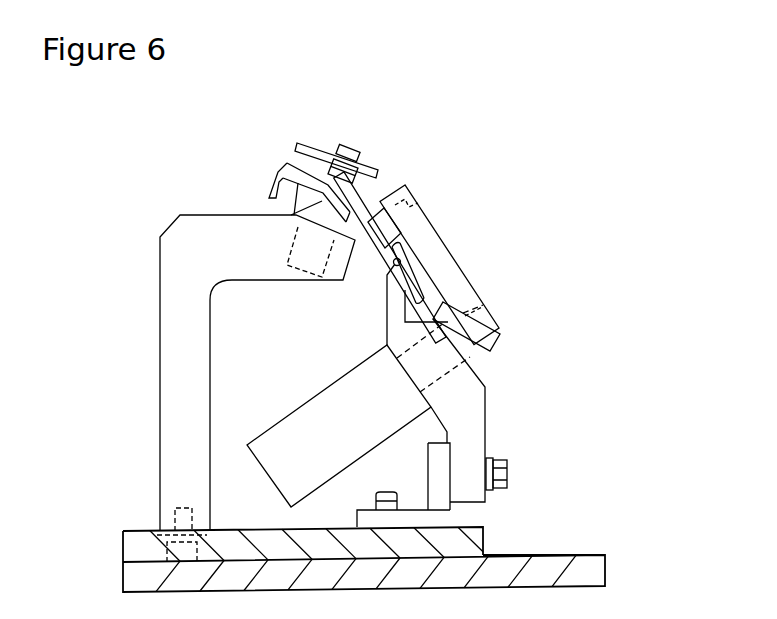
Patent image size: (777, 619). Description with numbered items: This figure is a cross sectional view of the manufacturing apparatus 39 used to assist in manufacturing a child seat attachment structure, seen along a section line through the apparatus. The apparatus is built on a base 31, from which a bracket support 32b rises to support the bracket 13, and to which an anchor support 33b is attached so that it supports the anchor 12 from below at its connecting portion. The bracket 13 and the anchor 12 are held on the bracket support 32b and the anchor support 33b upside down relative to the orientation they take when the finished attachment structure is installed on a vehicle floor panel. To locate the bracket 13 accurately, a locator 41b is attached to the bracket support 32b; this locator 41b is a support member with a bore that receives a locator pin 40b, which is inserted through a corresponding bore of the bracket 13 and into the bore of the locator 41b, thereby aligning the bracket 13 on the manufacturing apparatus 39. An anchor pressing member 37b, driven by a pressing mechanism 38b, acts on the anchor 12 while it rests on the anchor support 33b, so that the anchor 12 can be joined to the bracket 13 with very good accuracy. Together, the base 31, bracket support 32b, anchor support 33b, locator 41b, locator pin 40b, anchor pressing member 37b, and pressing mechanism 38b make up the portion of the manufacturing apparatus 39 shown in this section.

The base 31 is at (548, 555).
The bracket support 32b is at (168, 285).
The locator 41b is at (291, 213).
The bracket 13 is at (268, 183).
The locator pin 40b is at (350, 146).
The anchor 12 is at (385, 198).
The anchor pressing member 37b is at (448, 252).
The anchor support 33b is at (433, 312).
The manufacturing apparatus 39 is at (542, 360).
The pressing mechanism 38b is at (310, 400).